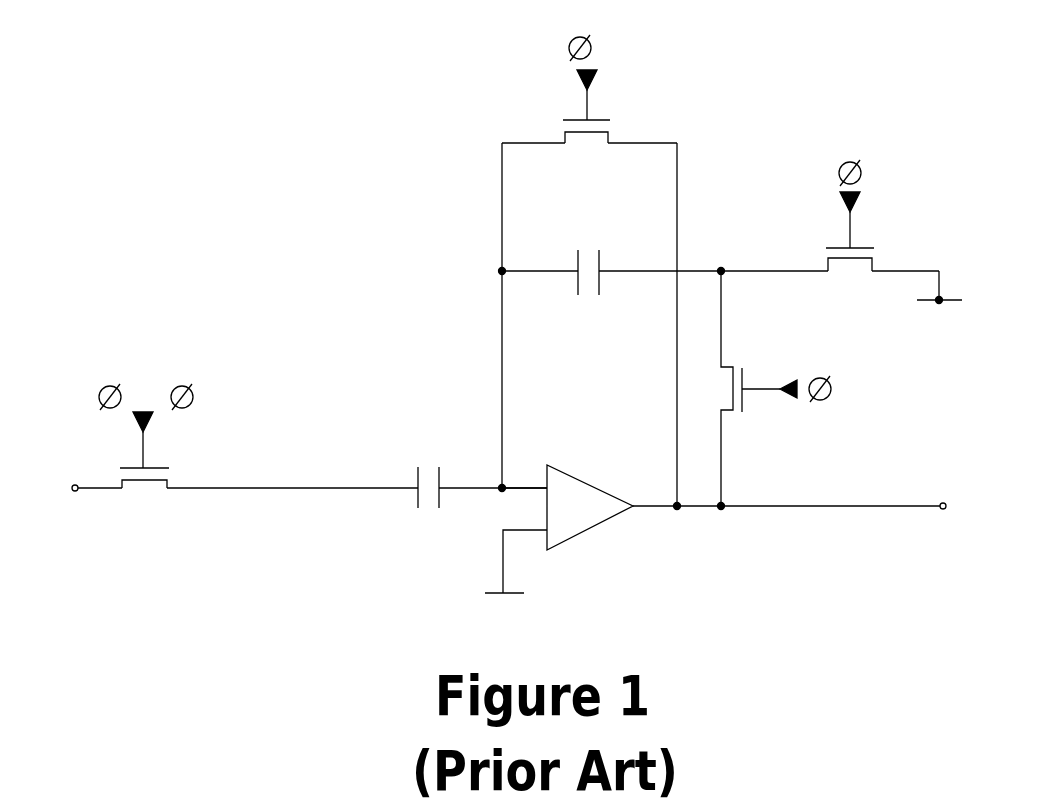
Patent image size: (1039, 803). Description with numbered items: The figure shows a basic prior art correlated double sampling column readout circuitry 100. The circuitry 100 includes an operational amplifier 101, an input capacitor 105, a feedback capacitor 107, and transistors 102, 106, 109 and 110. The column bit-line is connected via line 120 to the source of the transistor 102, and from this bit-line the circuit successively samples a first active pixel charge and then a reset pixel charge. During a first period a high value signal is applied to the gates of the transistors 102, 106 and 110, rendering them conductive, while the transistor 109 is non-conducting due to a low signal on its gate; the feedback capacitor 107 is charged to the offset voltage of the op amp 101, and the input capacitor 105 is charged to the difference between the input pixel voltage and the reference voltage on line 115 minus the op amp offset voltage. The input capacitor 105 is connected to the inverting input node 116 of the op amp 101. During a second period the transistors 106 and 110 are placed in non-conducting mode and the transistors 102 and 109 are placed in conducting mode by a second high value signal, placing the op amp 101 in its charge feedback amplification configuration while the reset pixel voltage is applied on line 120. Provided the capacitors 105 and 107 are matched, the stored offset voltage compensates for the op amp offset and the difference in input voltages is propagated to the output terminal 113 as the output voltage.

The correlated double sampling column readout circuitry 100 is at (850, 62).
The operational amplifier 101 is at (592, 538).
The transistor 102 is at (180, 467).
The input capacitor 105 is at (408, 458).
The transistor 106 is at (587, 148).
The feedback capacitor 107 is at (565, 262).
The transistor 109 is at (745, 420).
The transistor 110 is at (850, 276).
The output terminal 113 is at (943, 517).
The line 115 is at (494, 563).
The inverting input node 116 is at (513, 477).
The line 120 is at (78, 500).